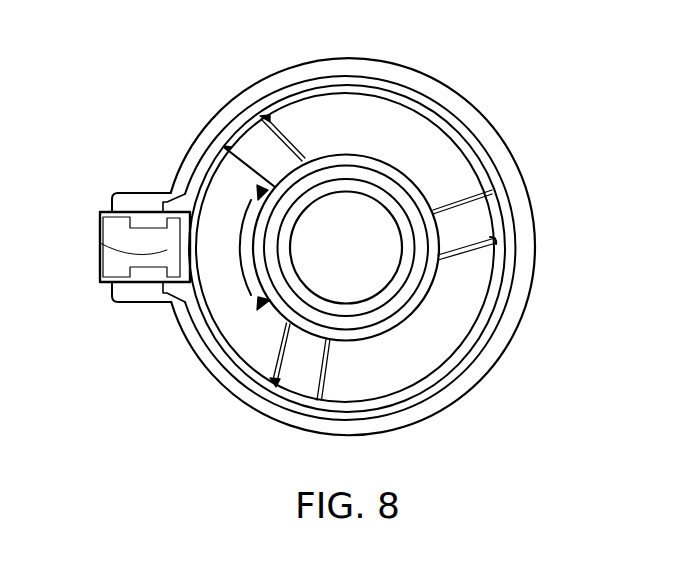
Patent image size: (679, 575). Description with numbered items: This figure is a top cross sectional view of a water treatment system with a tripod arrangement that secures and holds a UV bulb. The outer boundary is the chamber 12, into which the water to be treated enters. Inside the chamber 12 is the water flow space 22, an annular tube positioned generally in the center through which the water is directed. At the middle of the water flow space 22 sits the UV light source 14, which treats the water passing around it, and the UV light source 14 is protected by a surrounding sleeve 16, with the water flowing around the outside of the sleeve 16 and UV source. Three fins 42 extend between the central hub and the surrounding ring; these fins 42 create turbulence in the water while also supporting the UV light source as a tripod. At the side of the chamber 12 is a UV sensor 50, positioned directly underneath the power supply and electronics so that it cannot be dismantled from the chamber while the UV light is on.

The chamber 12 is at (508, 160).
The water flow space 22 is at (387, 120).
The UV light source 14 is at (303, 207).
The sleeve 16 is at (430, 292).
The fins 42 is at (298, 365).
The UV sensor 50 is at (102, 245).